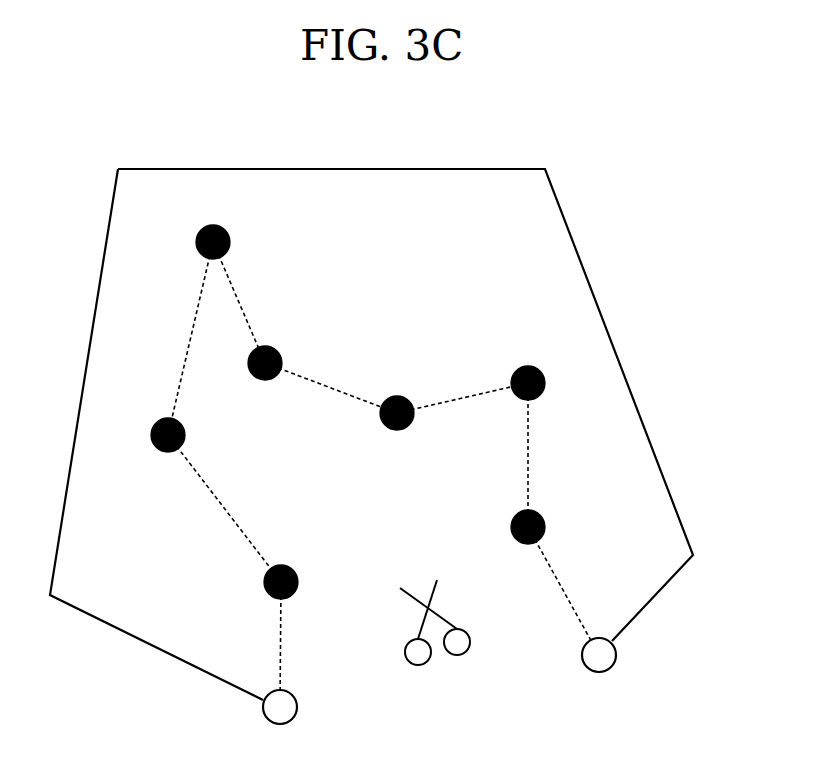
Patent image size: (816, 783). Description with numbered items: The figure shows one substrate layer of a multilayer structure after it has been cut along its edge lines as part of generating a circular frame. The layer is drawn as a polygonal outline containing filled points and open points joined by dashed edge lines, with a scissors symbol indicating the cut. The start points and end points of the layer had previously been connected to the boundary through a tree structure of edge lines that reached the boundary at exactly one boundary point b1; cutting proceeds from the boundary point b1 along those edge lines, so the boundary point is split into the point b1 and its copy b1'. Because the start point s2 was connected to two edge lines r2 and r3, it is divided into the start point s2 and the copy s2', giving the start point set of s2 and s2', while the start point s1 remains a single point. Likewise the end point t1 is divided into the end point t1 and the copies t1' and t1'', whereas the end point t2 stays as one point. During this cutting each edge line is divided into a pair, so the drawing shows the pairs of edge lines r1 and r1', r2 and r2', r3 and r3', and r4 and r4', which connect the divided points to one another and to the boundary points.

The start point s1 is at (208, 217).
The start point s2 is at (151, 435).
The divided start point s2' is at (280, 338).
The end point t1 is at (266, 581).
The divided end point t1' is at (397, 380).
The divided end point t1'' is at (550, 510).
The end point t2 is at (537, 365).
The boundary point b1 is at (275, 736).
The divided boundary point b1' is at (623, 682).
The edge line r1 is at (262, 644).
The divided edge line r1' is at (569, 591).
The edge line r2 is at (224, 508).
The divided edge line r2' is at (331, 371).
The edge line r3 is at (185, 338).
The divided edge line r3' is at (246, 302).
The edge line r4 is at (462, 384).
The divided edge line r4' is at (548, 455).